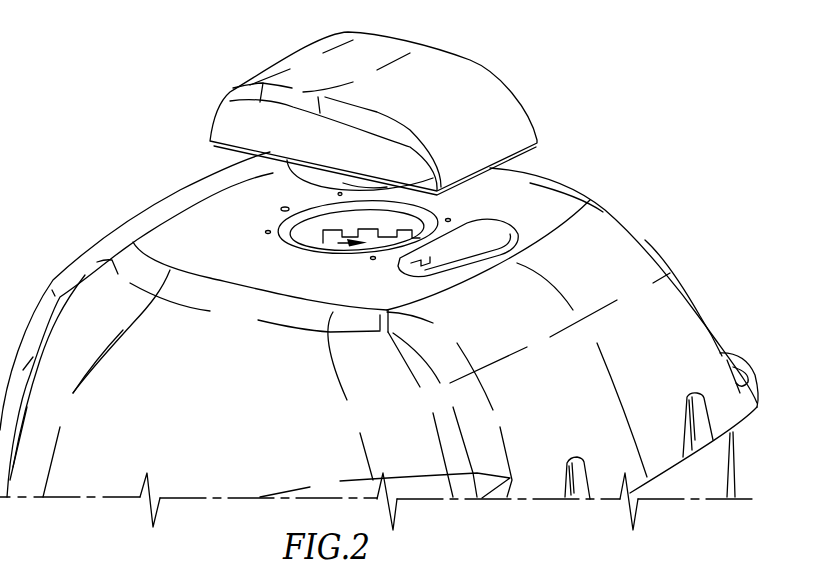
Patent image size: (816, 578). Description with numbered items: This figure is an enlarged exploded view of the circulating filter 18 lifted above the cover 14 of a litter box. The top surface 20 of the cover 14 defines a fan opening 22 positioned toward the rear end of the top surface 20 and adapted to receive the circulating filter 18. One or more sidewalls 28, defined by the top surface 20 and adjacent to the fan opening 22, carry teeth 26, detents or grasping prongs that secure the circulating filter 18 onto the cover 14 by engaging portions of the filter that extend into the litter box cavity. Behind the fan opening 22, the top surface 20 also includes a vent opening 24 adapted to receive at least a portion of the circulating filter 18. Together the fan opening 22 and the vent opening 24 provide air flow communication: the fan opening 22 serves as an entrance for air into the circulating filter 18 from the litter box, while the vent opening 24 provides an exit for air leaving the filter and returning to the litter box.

The cover 14 is at (63, 283).
The circulating filter 18 is at (475, 51).
The top surface 20 is at (540, 200).
The fan opening 22 is at (325, 243).
The vent opening 24 is at (473, 236).
The teeth 26 is at (347, 227).
The sidewall 28 is at (303, 237).